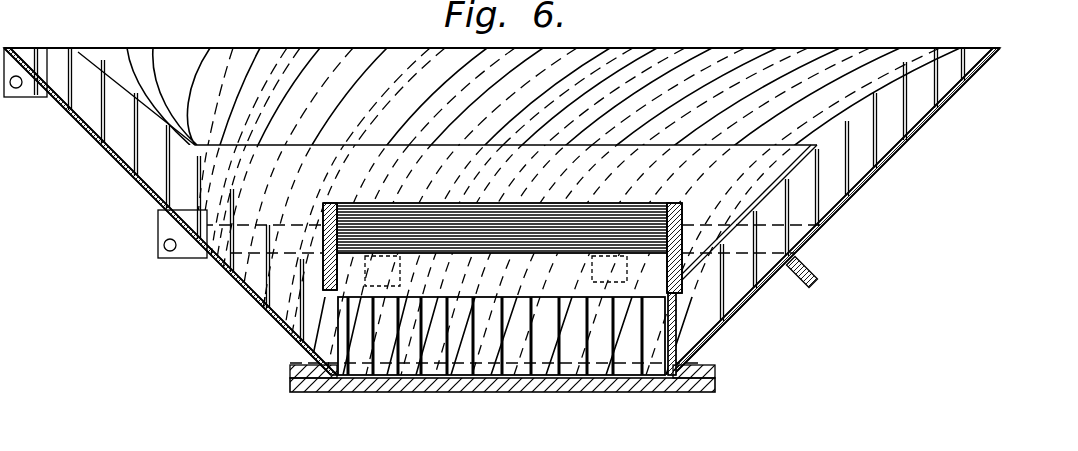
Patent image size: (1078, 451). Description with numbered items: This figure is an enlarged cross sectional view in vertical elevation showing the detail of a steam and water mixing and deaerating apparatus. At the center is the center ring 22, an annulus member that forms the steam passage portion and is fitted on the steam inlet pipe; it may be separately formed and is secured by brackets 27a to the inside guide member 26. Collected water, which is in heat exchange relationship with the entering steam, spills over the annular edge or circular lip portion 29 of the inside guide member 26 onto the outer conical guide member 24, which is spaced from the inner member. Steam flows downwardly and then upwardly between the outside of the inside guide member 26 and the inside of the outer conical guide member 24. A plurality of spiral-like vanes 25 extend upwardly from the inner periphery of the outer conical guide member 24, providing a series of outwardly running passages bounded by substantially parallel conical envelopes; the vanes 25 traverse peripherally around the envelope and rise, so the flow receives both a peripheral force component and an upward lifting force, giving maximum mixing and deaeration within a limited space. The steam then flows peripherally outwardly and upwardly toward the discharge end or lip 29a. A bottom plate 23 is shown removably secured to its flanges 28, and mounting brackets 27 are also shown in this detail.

The center ring 22 is at (672, 275).
The bottom plate 23 is at (294, 380).
The outer conical guide member 24 is at (877, 178).
The vanes 25 is at (780, 52).
The inside guide member 26 is at (265, 212).
The mounting brackets 27 is at (158, 242).
The brackets 27a is at (818, 279).
The flanges 28 is at (717, 368).
The circular lip portion 29 is at (197, 137).
The discharge end 29a is at (1001, 49).